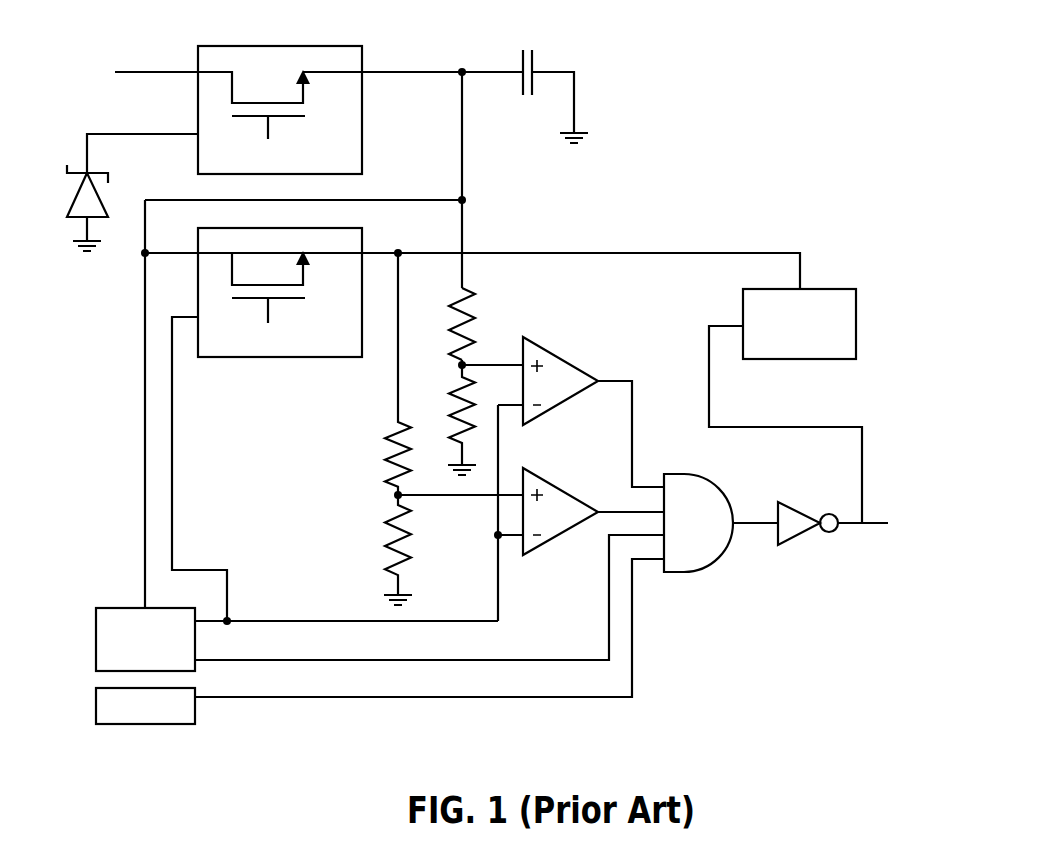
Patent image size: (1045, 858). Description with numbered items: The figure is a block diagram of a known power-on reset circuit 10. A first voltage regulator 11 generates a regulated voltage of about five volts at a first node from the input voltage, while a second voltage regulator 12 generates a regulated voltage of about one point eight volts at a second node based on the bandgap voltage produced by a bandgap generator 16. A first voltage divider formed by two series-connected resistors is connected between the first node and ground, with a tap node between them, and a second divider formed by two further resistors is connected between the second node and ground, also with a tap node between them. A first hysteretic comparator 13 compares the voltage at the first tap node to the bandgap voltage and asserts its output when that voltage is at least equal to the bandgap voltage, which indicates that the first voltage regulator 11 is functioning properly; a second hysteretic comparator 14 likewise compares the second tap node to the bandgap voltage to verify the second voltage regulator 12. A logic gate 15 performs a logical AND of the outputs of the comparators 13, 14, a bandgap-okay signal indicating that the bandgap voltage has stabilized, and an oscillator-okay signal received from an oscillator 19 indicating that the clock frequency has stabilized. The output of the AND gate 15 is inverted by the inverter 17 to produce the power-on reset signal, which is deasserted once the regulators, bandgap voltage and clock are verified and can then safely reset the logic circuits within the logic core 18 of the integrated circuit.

The power-on reset circuit 10 is at (719, 164).
The first voltage regulator 11 is at (332, 46).
The second voltage regulator 12 is at (347, 357).
The first hysteretic comparator 13 is at (553, 350).
The second hysteretic comparator 14 is at (553, 481).
The logic gate 15 is at (710, 478).
The bandgap generator 16 is at (111, 608).
The inverter 17 is at (800, 508).
The logic core 18 is at (843, 359).
The oscillator 19 is at (111, 724).